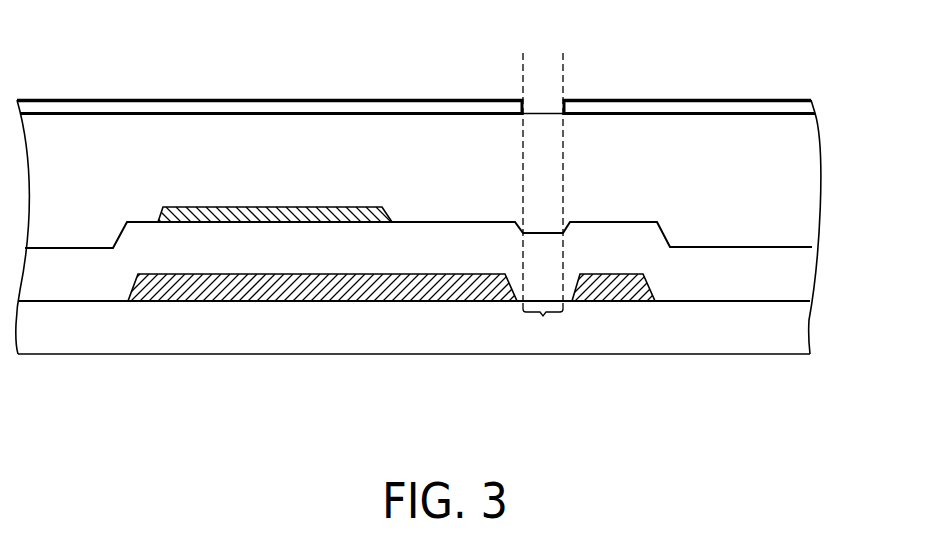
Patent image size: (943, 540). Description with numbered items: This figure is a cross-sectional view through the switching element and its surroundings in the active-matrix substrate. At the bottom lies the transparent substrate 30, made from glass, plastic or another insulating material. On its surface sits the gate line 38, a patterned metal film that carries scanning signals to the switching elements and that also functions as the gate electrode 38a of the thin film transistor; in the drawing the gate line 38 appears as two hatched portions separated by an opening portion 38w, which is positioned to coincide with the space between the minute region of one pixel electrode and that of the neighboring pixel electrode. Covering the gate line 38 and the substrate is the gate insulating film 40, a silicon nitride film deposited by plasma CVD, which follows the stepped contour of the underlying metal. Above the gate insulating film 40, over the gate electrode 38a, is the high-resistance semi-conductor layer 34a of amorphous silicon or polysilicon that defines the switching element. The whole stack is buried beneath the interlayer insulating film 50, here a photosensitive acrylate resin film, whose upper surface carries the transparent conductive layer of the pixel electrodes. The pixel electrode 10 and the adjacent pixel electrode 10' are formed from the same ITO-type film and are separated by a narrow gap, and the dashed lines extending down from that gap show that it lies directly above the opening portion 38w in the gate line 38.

The pixel electrode 10 is at (270, 78).
The adjacent pixel electrode 10' is at (689, 78).
The interlayer insulating film 50 is at (807, 167).
The high-resistance semi-conductor layer 34a is at (383, 207).
The gate electrode 38a is at (188, 297).
The gate line 38 is at (463, 293).
The opening portion 38w is at (543, 316).
The gate insulating film 40 is at (707, 288).
The transparent substrate 30 is at (742, 333).